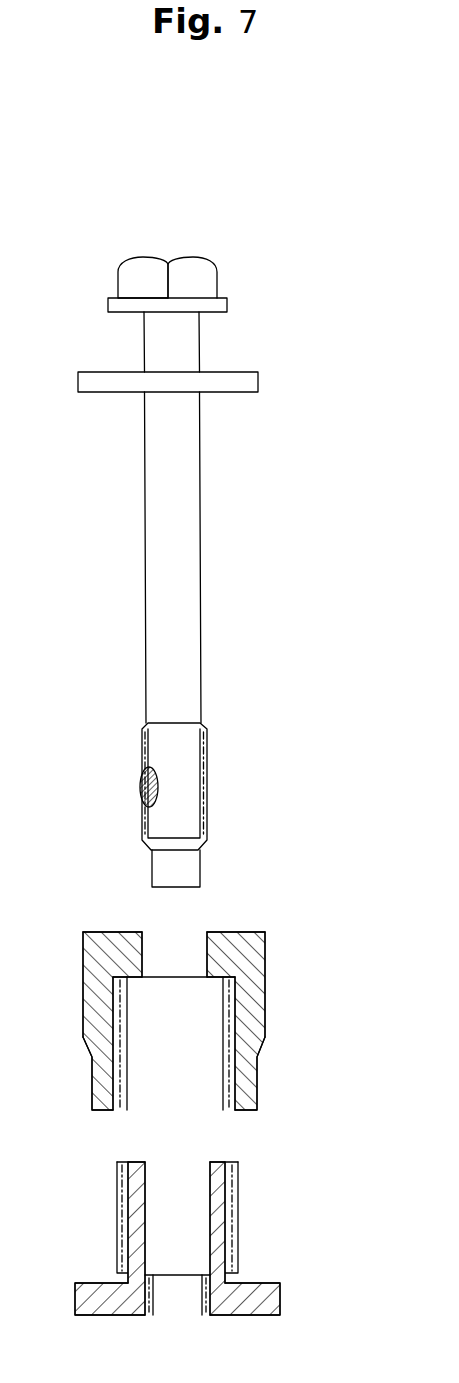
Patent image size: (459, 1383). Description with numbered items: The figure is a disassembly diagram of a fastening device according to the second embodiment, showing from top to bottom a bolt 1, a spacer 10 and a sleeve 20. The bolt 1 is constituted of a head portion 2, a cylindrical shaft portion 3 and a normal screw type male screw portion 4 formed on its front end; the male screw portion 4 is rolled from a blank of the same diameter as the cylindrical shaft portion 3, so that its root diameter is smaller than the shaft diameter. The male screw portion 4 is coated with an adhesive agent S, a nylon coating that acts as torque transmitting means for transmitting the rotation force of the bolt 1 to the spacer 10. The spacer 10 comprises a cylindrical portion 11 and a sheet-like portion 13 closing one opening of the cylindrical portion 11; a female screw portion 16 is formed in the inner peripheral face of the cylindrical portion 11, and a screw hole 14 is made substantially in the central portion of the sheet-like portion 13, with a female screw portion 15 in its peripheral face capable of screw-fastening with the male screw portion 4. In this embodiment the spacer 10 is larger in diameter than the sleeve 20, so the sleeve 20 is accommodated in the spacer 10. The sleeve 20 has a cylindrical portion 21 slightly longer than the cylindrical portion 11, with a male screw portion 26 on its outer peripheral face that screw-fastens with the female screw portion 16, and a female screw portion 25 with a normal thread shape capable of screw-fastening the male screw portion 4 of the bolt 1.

The bolt 1 is at (177, 572).
The head portion 2 is at (208, 281).
The cylindrical shaft portion 3 is at (185, 577).
The male screw portion 4 is at (207, 772).
The adhesive agent S is at (143, 780).
The spacer 10 is at (218, 969).
The cylindrical portion 11 is at (247, 1080).
The sheet-like portion 13 is at (222, 943).
The screw hole 14 is at (182, 945).
The female screw portion 15 is at (158, 947).
The female screw portion 16 is at (123, 1043).
The sleeve 20 is at (202, 1267).
The cylindrical portion 21 is at (138, 1197).
The female screw portion 25 is at (153, 1290).
The male screw portion 26 is at (237, 1238).